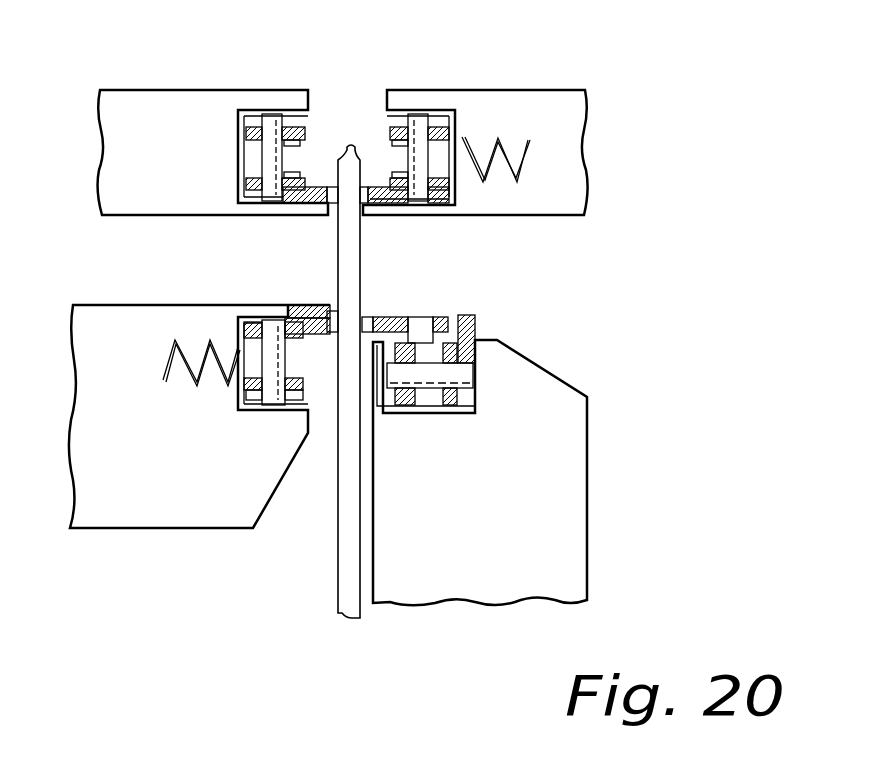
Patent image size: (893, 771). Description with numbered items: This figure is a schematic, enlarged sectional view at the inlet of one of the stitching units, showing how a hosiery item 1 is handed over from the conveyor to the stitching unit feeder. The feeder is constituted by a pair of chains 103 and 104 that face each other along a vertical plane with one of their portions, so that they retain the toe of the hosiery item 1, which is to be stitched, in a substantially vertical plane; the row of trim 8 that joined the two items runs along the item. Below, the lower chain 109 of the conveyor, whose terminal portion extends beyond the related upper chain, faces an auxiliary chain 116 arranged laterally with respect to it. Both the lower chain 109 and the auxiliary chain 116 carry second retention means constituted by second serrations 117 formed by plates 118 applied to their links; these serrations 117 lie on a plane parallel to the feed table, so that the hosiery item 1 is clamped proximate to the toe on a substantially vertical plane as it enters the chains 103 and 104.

The hosiery item 1 is at (350, 262).
The row of trim 8 is at (347, 146).
The chain 103 is at (312, 150).
The chain 104 is at (385, 152).
The lower chain 109 is at (440, 375).
The auxiliary chain 116 is at (270, 364).
The second serrations 117 is at (318, 322).
The plates 118 is at (300, 312).